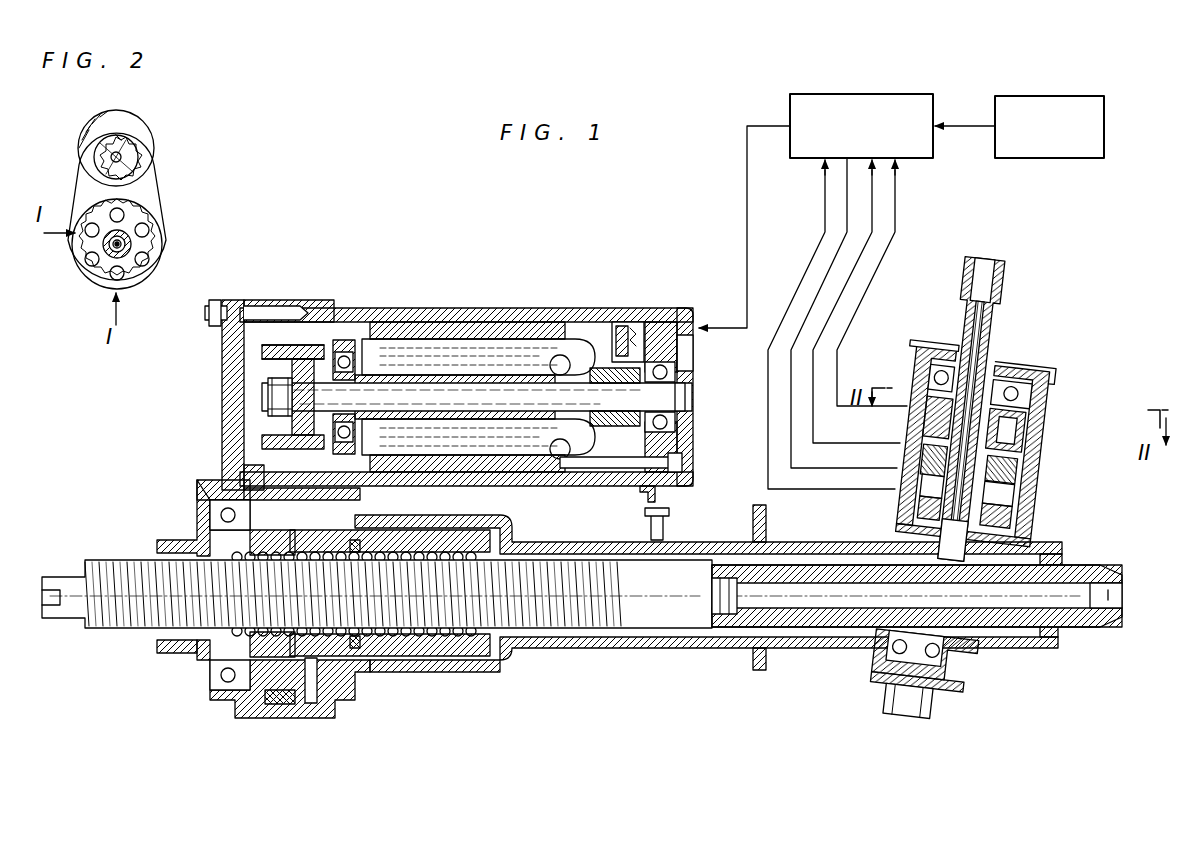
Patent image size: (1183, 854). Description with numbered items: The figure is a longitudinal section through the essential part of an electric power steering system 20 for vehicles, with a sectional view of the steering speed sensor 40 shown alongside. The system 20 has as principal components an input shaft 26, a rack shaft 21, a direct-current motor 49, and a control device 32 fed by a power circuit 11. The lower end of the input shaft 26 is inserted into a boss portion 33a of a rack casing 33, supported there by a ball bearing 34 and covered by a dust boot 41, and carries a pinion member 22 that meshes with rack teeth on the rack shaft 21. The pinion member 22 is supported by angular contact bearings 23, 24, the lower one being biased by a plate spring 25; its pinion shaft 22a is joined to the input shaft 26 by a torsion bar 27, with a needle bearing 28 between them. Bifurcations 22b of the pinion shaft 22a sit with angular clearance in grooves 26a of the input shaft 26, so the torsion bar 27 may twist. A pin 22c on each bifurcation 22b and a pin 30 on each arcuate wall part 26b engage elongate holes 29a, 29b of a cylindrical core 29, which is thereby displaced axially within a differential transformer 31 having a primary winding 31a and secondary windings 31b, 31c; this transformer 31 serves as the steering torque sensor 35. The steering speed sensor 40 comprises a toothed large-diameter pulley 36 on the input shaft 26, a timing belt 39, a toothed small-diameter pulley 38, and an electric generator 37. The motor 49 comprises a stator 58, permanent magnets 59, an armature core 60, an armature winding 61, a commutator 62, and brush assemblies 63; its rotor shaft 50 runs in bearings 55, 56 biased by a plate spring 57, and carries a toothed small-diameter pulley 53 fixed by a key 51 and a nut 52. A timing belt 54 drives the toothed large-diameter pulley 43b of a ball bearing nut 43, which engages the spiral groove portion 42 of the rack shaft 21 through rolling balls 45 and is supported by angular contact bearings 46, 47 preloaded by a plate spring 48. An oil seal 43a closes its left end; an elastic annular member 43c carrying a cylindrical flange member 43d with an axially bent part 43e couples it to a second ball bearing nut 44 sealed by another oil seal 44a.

In FIG. 1, the power circuit 11 is at (1040, 96).
In FIG. 1, the electric power steering system 20 is at (705, 278).
In FIG. 1, the rack shaft 21 is at (723, 565).
In FIG. 1, the pinion member 22 is at (955, 568).
In FIG. 1, the pinion shaft 22a is at (935, 567).
In FIG. 1, the bifurcations 22b is at (905, 500).
In FIG. 1, the pin 22c is at (898, 468).
In FIG. 1, the angular contact bearing 23 is at (1022, 532).
In FIG. 1, the angular contact bearing 24 is at (970, 655).
In FIG. 1, the plate spring 25 is at (955, 698).
In FIG. 2, the input shaft 26 is at (135, 250).
In FIG. 1, the input shaft 26 is at (975, 266).
In FIG. 1, the grooves 26a is at (898, 445).
In FIG. 1, the arcuate wall part 26b is at (1014, 418).
In FIG. 2, the torsion bar 27 is at (122, 255).
In FIG. 1, the torsion bar 27 is at (968, 325).
In FIG. 1, the needle bearing 28 is at (790, 568).
In FIG. 1, the cylindrical core 29 is at (911, 430).
In FIG. 1, the elongate hole 29a is at (880, 490).
In FIG. 1, the elongate hole 29b is at (1012, 476).
In FIG. 1, the pin 30 is at (1010, 505).
In FIG. 1, the differential transformer 31 is at (1042, 500).
In FIG. 1, the primary winding 31a is at (1010, 490).
In FIG. 1, the secondary winding 31b is at (1008, 455).
In FIG. 1, the secondary winding 31c is at (1010, 522).
In FIG. 1, the control device 32 is at (862, 94).
In FIG. 1, the rack casing 33 is at (678, 542).
In FIG. 1, the boss portion 33a is at (925, 350).
In FIG. 1, the ball bearing 34 is at (1030, 366).
In FIG. 1, the steering torque sensor 35 is at (1082, 440).
In FIG. 2, the toothed large-diameter pulley 36 is at (152, 232).
In FIG. 2, the electric generator 37 is at (137, 130).
In FIG. 2, the toothed small-diameter pulley 38 is at (130, 155).
In FIG. 2, the timing belt 39 is at (152, 183).
In FIG. 2, the steering speed sensor 40 is at (210, 203).
In FIG. 1, the steering speed sensor 40 is at (900, 385).
In FIG. 1, the dust boot 41 is at (1005, 365).
In FIG. 1, the spiral groove portion 42 is at (122, 558).
In FIG. 1, the ball bearing nut 43 is at (222, 535).
In FIG. 1, the oil seal 43a is at (208, 650).
In FIG. 1, the toothed large-diameter pulley 43b is at (285, 704).
In FIG. 1, the elastic annular member 43c is at (395, 672).
In FIG. 1, the cylindrical flange member 43d is at (460, 660).
In FIG. 1, the axially bent part 43e is at (415, 664).
In FIG. 1, the ball bearing nut 44 is at (492, 530).
In FIG. 1, the oil seal 44a is at (508, 655).
In FIG. 1, the rolling balls 45 is at (246, 558).
In FIG. 1, the angular contact bearing 46 is at (212, 703).
In FIG. 1, the angular contact bearing 47 is at (345, 695).
In FIG. 1, the plate spring 48 is at (372, 680).
In FIG. 1, the direct-current motor 49 is at (461, 367).
In FIG. 1, the rotor shaft 50 is at (685, 395).
In FIG. 1, the key 51 is at (330, 383).
In FIG. 1, the nut 52 is at (268, 398).
In FIG. 1, the toothed small-diameter pulley 53 is at (292, 365).
In FIG. 1, the timing belt 54 is at (275, 345).
In FIG. 1, the bearing 55 is at (340, 345).
In FIG. 1, the bearing 56 is at (652, 325).
In FIG. 1, the plate spring 57 is at (678, 362).
In FIG. 1, the stator 58 is at (386, 308).
In FIG. 1, the permanent magnets 59 is at (405, 322).
In FIG. 1, the armature core 60 is at (478, 352).
In FIG. 1, the armature winding 61 is at (505, 345).
In FIG. 1, the commutator 62 is at (575, 360).
In FIG. 1, the brush assemblies 63 is at (622, 325).